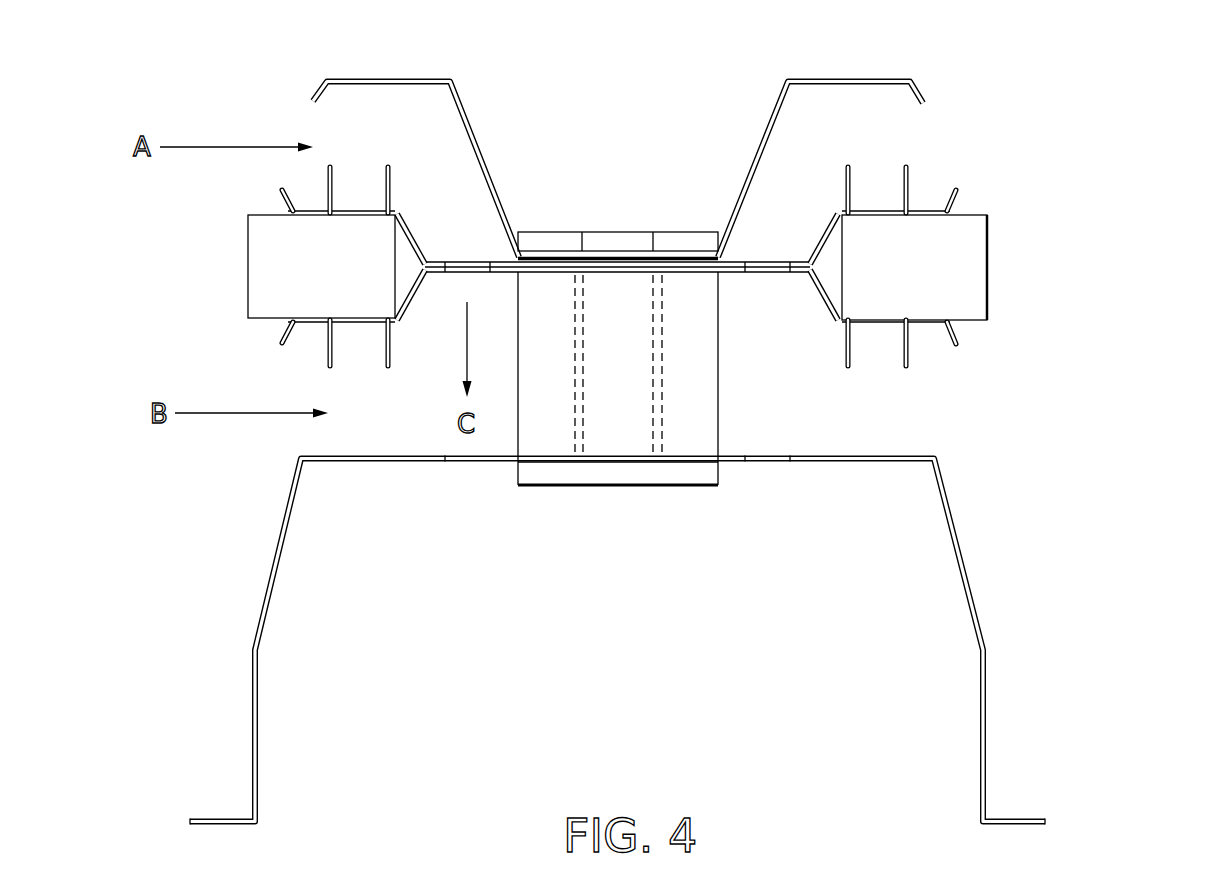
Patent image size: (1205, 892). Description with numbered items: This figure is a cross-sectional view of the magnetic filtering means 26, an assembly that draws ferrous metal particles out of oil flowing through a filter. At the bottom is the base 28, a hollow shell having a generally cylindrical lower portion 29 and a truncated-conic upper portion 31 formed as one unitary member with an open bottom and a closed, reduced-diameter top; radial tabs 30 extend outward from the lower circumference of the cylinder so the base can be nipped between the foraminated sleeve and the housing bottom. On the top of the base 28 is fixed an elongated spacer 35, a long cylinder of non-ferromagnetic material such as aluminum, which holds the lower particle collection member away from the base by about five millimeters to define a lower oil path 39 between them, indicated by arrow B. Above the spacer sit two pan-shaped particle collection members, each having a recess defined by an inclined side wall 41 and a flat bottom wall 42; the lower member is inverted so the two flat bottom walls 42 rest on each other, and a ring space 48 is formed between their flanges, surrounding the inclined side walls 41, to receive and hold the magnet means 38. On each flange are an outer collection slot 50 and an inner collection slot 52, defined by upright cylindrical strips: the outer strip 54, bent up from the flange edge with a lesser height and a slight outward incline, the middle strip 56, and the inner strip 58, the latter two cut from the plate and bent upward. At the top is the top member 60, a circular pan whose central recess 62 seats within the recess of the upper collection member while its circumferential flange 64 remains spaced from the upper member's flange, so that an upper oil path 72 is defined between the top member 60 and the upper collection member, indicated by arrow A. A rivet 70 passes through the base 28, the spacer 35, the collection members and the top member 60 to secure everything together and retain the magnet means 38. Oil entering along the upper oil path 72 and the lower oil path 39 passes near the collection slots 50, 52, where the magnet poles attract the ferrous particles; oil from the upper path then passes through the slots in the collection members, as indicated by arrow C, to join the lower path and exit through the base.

The magnetic filtering means 26 is at (1050, 327).
The base 28 is at (997, 623).
The cylindrical lower portion 29 is at (988, 705).
The radial tabs 30 is at (1008, 817).
The truncated-conic upper portion 31 is at (958, 525).
The elongated spacer 35 is at (720, 418).
The magnet means 38 is at (977, 272).
The lower oil path 39 is at (383, 427).
The inclined side wall 41 is at (407, 226).
The flat bottom wall 42 is at (477, 262).
The ring space 48 is at (833, 280).
The outer collection slot 50 is at (923, 207).
The inner collection slot 52 is at (867, 187).
The outer strip 54 is at (958, 195).
The middle strip 56 is at (910, 173).
The inner strip 58 is at (843, 183).
The top member 60 is at (392, 70).
The central recess 62 is at (635, 127).
The circumferential flange 64 is at (847, 82).
The rivet 70 is at (622, 487).
The upper oil path 72 is at (363, 152).